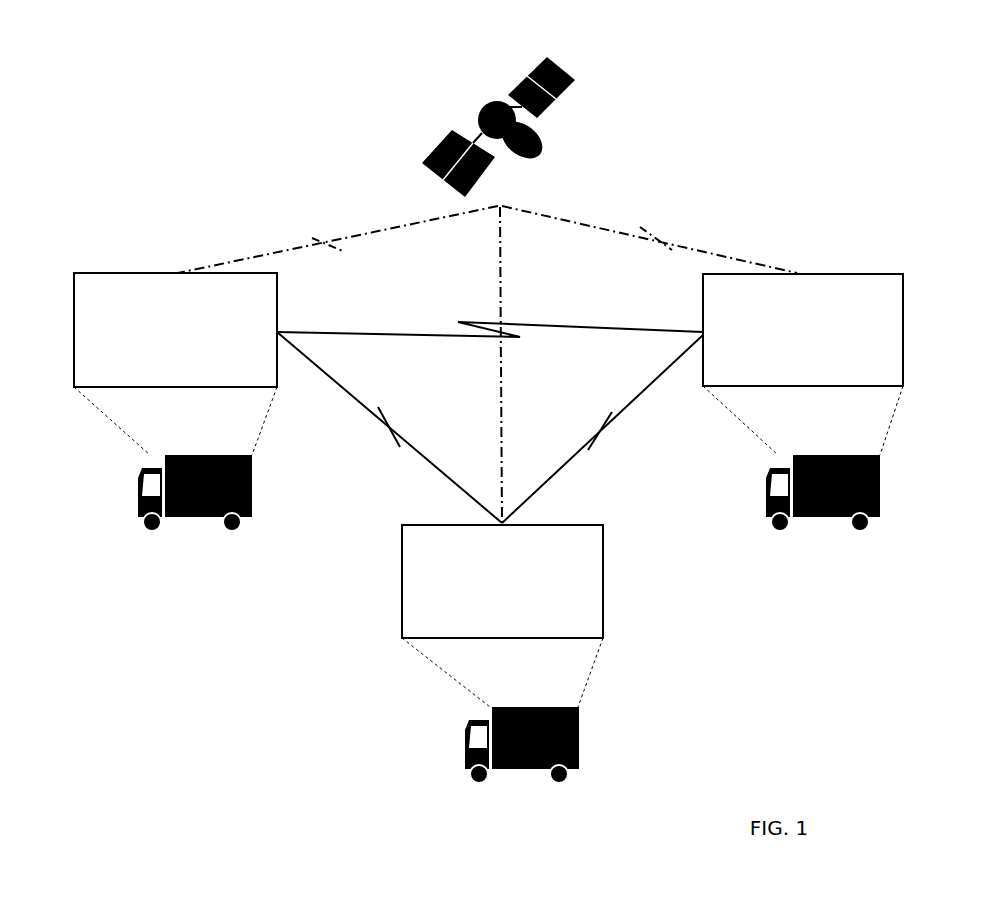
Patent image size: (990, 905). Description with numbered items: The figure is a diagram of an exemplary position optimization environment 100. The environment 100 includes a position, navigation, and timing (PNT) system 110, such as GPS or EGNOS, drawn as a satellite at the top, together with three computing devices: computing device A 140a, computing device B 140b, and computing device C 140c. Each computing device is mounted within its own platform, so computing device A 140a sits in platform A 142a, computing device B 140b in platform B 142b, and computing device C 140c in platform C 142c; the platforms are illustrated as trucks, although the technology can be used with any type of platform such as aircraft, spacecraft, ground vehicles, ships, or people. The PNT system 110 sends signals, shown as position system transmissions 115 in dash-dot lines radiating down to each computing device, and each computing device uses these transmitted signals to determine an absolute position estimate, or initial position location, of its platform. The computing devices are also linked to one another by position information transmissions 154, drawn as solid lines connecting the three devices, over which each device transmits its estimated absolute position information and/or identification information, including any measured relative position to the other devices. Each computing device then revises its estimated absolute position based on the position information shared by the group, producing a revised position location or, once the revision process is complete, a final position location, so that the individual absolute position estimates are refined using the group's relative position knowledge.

The position optimization environment 100 is at (488, 448).
The position, navigation, and timing (PNT) system 110 is at (401, 111).
The position system transmissions 115 is at (430, 312).
The computing device A 140a is at (198, 365).
The computing device B 140b is at (525, 617).
The computing device C 140c is at (826, 366).
The platform A 142a is at (187, 537).
The platform B 142b is at (515, 789).
The platform C 142c is at (815, 537).
The position information transmissions 154 is at (434, 544).